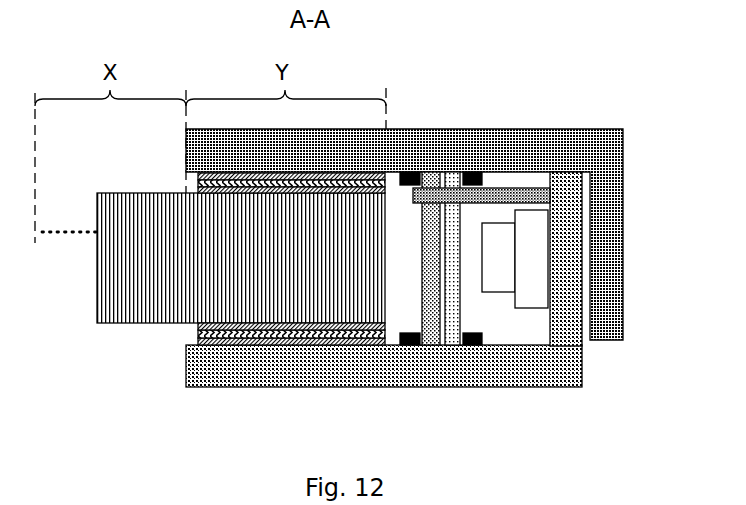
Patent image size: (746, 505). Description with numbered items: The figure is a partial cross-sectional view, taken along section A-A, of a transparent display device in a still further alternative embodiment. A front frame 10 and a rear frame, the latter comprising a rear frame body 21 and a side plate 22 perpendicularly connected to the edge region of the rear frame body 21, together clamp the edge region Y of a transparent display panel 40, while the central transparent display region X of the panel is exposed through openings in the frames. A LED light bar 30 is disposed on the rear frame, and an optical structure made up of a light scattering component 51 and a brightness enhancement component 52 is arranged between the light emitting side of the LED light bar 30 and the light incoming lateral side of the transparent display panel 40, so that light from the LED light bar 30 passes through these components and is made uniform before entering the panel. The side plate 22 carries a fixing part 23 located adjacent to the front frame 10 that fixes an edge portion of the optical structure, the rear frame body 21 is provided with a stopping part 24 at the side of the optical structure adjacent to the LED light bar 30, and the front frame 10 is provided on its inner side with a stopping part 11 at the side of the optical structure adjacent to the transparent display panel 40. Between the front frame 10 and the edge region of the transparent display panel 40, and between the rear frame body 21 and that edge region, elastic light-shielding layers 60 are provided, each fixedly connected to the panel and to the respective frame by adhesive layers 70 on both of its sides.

The front frame 10 is at (547, 131).
The stopping part 11 is at (403, 158).
The rear frame body 21 is at (542, 363).
The side plate 22 is at (568, 298).
The fixing part 23 is at (523, 197).
The stopping part 24 is at (470, 348).
The LED light bar 30 is at (522, 280).
The transparent display panel 40 is at (323, 326).
The light scattering component 51 is at (460, 213).
The brightness enhancement component 52 is at (427, 213).
The elastic light-shielding layer 60 is at (262, 338).
The adhesive layer 70 is at (205, 345).